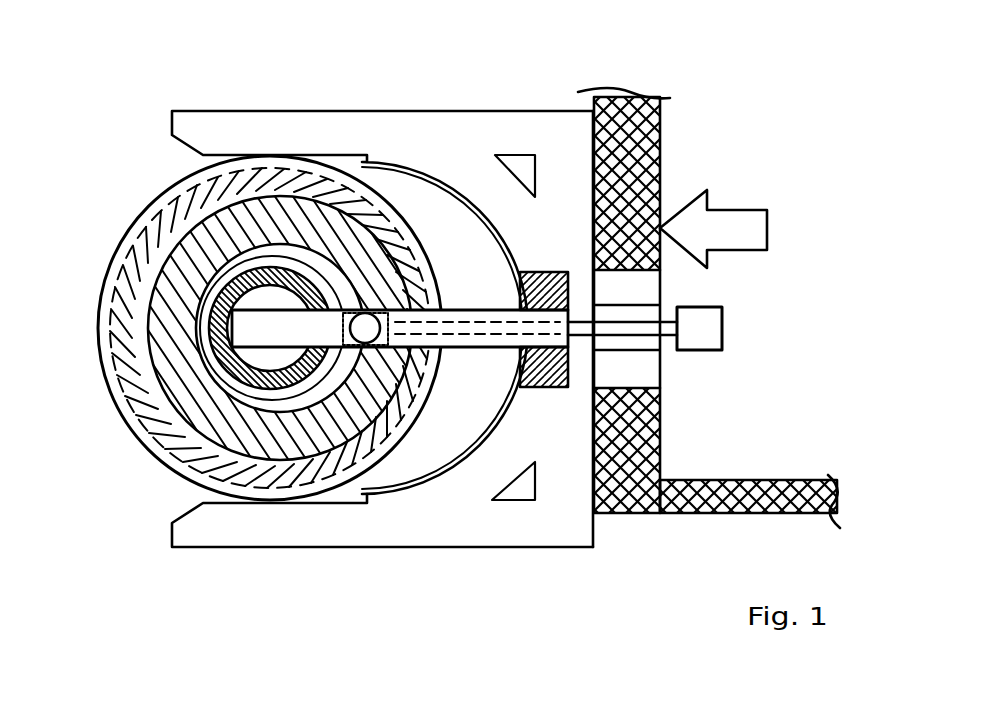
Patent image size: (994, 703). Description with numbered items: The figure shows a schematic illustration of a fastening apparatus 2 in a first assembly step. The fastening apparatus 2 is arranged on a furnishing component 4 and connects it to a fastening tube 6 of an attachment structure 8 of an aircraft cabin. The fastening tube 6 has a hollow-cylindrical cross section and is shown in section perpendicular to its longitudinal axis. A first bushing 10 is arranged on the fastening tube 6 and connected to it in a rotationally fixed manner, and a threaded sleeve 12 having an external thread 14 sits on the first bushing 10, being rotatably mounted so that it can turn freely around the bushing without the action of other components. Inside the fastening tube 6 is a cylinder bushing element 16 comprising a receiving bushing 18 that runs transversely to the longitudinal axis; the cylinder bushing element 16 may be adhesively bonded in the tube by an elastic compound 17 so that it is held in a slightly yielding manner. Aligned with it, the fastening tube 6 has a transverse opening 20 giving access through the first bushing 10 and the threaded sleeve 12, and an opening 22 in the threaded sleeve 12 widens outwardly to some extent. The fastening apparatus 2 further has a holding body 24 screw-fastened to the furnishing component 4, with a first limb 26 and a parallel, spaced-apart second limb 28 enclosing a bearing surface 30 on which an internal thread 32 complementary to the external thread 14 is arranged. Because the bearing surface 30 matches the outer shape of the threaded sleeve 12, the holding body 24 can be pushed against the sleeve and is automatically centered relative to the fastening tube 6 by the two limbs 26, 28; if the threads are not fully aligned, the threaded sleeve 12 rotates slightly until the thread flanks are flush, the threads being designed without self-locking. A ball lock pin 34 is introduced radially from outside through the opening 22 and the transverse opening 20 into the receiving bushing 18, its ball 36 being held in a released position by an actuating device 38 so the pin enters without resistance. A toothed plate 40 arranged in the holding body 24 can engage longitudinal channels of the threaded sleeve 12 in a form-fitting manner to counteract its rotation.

The fastening apparatus 2 is at (583, 55).
The furnishing component 4 is at (643, 170).
The fastening tube 6 is at (288, 260).
The attachment structure 8 is at (125, 540).
The first bushing 10 is at (290, 450).
The threaded sleeve 12 is at (323, 460).
The external thread 14 is at (143, 448).
The cylinder bushing element 16 is at (197, 450).
The elastic compound 17 is at (210, 333).
The receiving bushing 18 is at (287, 342).
The transverse opening 20 is at (378, 290).
The opening 22 is at (430, 300).
The holding body 24 is at (545, 532).
The first limb 26 is at (327, 565).
The second limb 28 is at (293, 92).
The bearing surface 30 is at (520, 434).
The internal thread 32 is at (430, 300).
The ball lock pin 34 is at (485, 347).
The ball 36 is at (355, 307).
The actuating device 38 is at (670, 337).
The toothed plate 40 is at (570, 283).